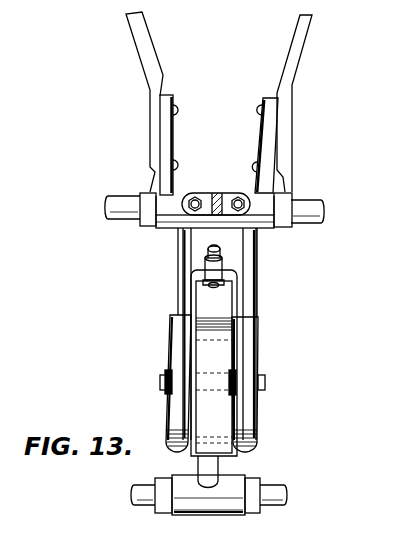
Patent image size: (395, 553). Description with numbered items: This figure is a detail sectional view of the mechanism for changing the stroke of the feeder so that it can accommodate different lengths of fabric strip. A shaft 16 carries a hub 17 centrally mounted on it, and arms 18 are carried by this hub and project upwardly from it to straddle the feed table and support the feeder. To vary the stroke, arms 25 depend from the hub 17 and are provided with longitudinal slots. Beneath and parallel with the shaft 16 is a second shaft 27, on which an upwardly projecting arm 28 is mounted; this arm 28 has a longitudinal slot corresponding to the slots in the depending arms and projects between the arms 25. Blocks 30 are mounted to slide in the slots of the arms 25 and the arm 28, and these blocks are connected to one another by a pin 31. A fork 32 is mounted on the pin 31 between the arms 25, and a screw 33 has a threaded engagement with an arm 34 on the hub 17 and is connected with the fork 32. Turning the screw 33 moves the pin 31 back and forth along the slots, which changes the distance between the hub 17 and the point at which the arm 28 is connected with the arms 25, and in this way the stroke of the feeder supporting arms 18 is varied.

The shaft 16 is at (133, 214).
The hub 17 is at (177, 208).
The arms 18 is at (287, 72).
The arms 25 is at (183, 251).
The shaft 27 is at (268, 495).
The arm 28 is at (213, 342).
The blocks 30 is at (254, 393).
The pin 31 is at (161, 384).
The fork 32 is at (196, 297).
The screw 33 is at (212, 253).
The arm 34 is at (227, 216).